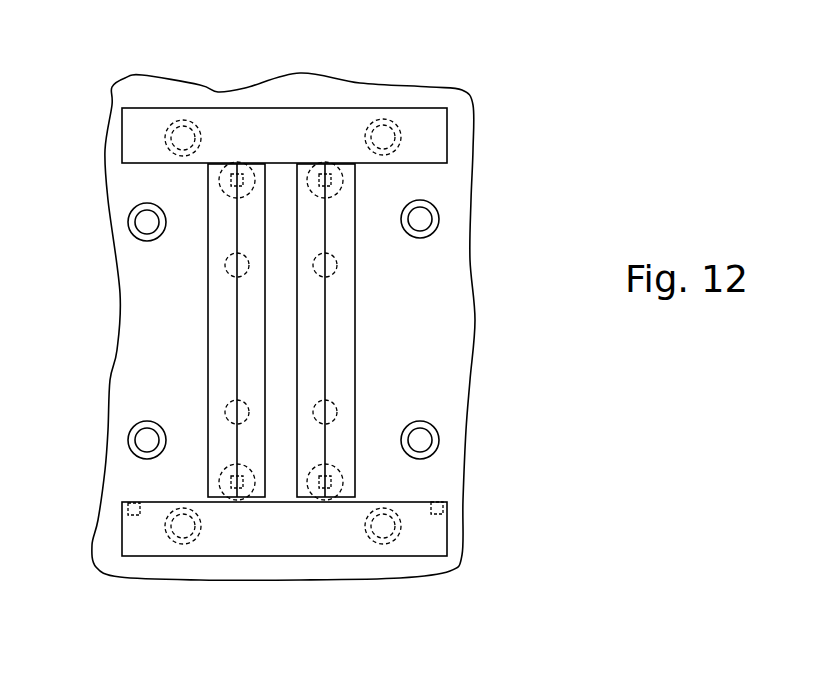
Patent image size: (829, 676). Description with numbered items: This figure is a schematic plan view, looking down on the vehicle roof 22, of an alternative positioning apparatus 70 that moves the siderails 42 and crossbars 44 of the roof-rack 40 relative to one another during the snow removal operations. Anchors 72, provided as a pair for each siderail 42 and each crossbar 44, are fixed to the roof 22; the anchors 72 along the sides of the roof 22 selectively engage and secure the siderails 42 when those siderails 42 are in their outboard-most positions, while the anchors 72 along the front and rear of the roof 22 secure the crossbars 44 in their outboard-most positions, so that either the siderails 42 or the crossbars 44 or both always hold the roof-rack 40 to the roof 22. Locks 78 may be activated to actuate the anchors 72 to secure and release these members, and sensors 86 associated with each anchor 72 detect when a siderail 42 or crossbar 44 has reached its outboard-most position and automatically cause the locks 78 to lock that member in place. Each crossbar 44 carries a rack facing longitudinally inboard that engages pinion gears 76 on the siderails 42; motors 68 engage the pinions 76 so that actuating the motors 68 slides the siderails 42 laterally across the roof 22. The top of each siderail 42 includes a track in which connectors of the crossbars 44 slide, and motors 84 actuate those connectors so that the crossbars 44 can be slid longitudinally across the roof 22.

The roof-rack 40 is at (296, 326).
The roof 22 is at (470, 385).
The positioning apparatus 70 is at (448, 100).
The crossbar 44 is at (247, 557).
The siderail 42 is at (355, 282).
The pinion gear 76 is at (305, 177).
The motor 68 is at (331, 482).
The anchor 72 is at (433, 228).
The sensor 86 is at (128, 438).
The lock 78 is at (435, 427).
The motor 84 is at (126, 509).